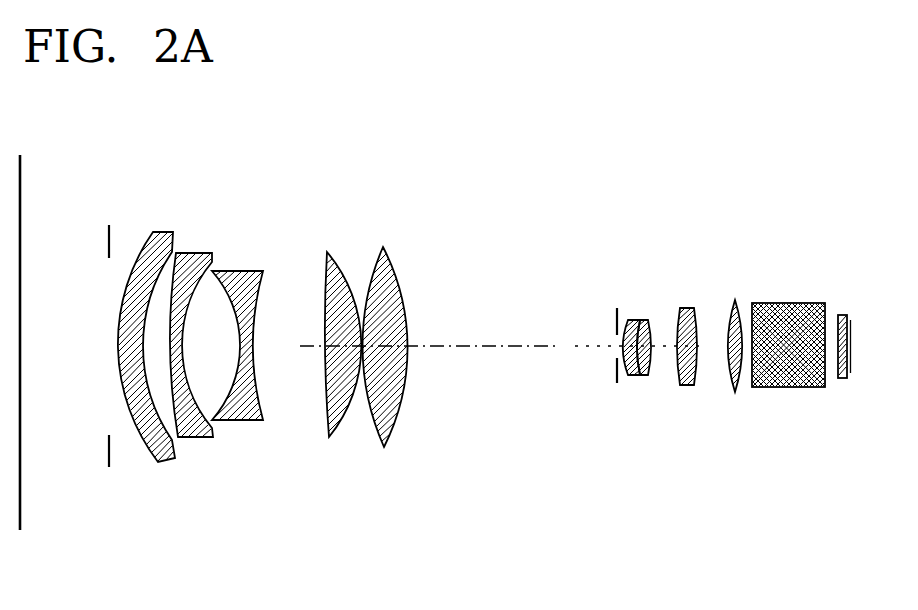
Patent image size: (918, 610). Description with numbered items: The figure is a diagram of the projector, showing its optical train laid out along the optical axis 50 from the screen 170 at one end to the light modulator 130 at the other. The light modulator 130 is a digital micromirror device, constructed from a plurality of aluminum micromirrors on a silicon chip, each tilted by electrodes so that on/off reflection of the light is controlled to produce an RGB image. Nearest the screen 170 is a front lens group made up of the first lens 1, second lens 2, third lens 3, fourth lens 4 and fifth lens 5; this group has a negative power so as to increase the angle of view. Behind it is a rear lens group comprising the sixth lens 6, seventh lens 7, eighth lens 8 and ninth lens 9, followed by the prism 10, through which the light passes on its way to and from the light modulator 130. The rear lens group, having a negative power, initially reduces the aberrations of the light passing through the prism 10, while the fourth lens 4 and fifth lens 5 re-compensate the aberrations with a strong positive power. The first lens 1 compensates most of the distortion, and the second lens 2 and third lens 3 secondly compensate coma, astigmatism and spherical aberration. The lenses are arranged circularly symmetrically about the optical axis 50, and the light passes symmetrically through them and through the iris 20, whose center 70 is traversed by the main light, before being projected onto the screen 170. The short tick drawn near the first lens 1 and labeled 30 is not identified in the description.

The first lens 1 is at (166, 231).
The second lens 2 is at (198, 252).
The third lens 3 is at (240, 270).
The fourth lens 4 is at (326, 251).
The fifth lens 5 is at (383, 246).
The sixth lens 6 is at (628, 318).
The seventh lens 7 is at (645, 318).
The eighth lens 8 is at (684, 307).
The ninth lens 9 is at (737, 299).
The prism 10 is at (790, 302).
The iris 20 is at (610, 375).
The second optical element 30 is at (101, 476).
The optical axis 50 is at (68, 344).
The center of the iris 70 is at (614, 342).
The light modulator 130 is at (847, 385).
The screen 170 is at (30, 524).